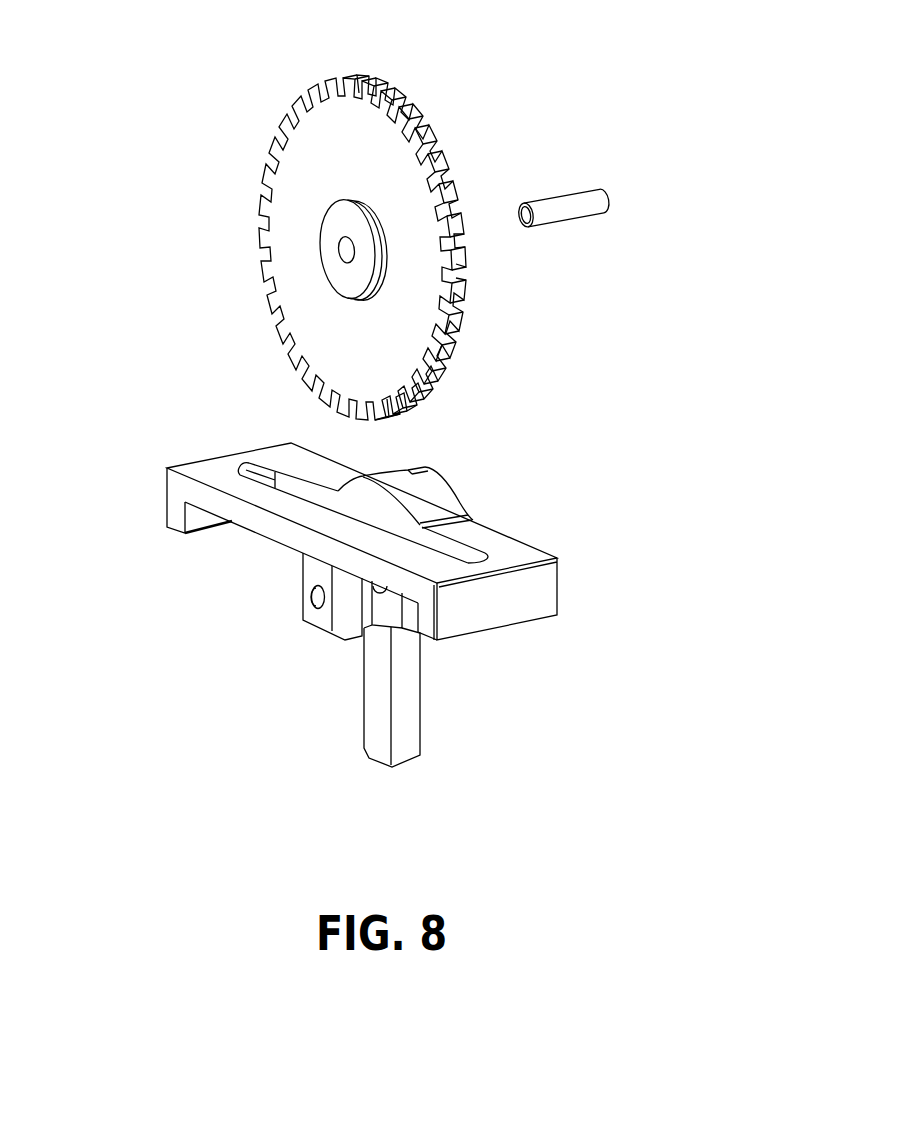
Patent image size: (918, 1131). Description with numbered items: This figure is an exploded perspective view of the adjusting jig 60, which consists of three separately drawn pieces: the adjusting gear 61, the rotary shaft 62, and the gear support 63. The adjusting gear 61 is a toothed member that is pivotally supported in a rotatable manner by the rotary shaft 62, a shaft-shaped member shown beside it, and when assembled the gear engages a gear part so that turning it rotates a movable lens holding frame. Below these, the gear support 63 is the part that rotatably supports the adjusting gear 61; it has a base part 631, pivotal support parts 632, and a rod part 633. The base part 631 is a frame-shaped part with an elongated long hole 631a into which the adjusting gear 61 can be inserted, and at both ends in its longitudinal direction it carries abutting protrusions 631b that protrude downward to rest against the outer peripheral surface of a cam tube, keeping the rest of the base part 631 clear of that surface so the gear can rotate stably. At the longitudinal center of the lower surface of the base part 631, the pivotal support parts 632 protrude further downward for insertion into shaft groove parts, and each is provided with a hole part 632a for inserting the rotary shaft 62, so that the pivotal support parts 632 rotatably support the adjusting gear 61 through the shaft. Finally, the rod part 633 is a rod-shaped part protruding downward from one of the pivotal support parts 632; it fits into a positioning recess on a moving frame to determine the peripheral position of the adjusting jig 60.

The adjusting jig 60 is at (517, 100).
The adjusting gear 61 is at (310, 143).
The rotary shaft 62 is at (567, 210).
The gear support 63 is at (370, 599).
The base part 631 is at (232, 512).
The long hole 631a is at (463, 556).
The abutting protrusions 631b is at (177, 523).
The pivotal support parts 632 is at (318, 618).
The hole part 632a is at (313, 600).
The rod part 633 is at (407, 735).